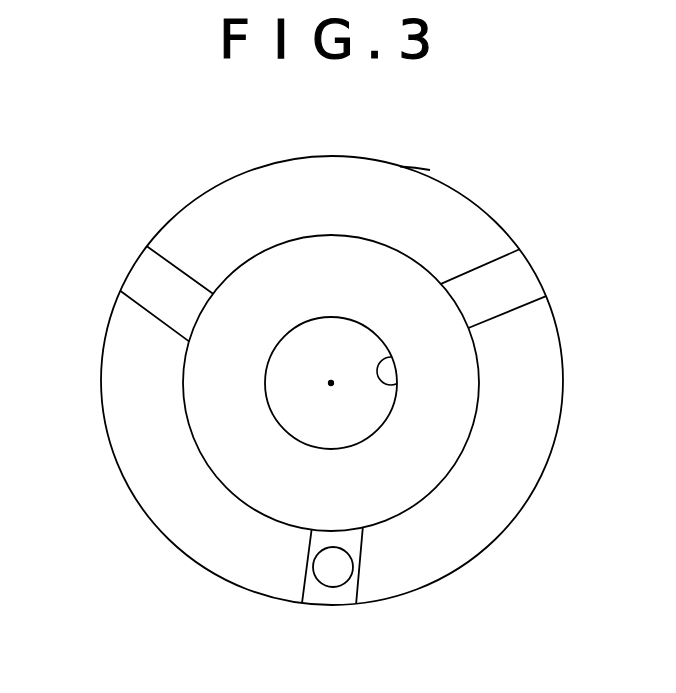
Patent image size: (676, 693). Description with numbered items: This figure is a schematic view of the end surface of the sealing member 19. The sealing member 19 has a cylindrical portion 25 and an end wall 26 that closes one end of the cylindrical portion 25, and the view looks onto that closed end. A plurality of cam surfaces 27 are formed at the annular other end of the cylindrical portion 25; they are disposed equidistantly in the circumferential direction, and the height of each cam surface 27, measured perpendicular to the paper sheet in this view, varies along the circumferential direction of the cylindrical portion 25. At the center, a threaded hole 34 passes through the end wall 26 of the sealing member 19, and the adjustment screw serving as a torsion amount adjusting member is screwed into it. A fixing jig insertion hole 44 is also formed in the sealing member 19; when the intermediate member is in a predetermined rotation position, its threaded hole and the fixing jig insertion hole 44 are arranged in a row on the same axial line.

The sealing member 19 is at (462, 188).
The cylindrical portion 25 is at (413, 168).
The end wall 26 is at (207, 383).
The cam surfaces 27 is at (268, 187).
The threaded hole 34 is at (397, 388).
The fixing jig insertion hole 44 is at (342, 567).